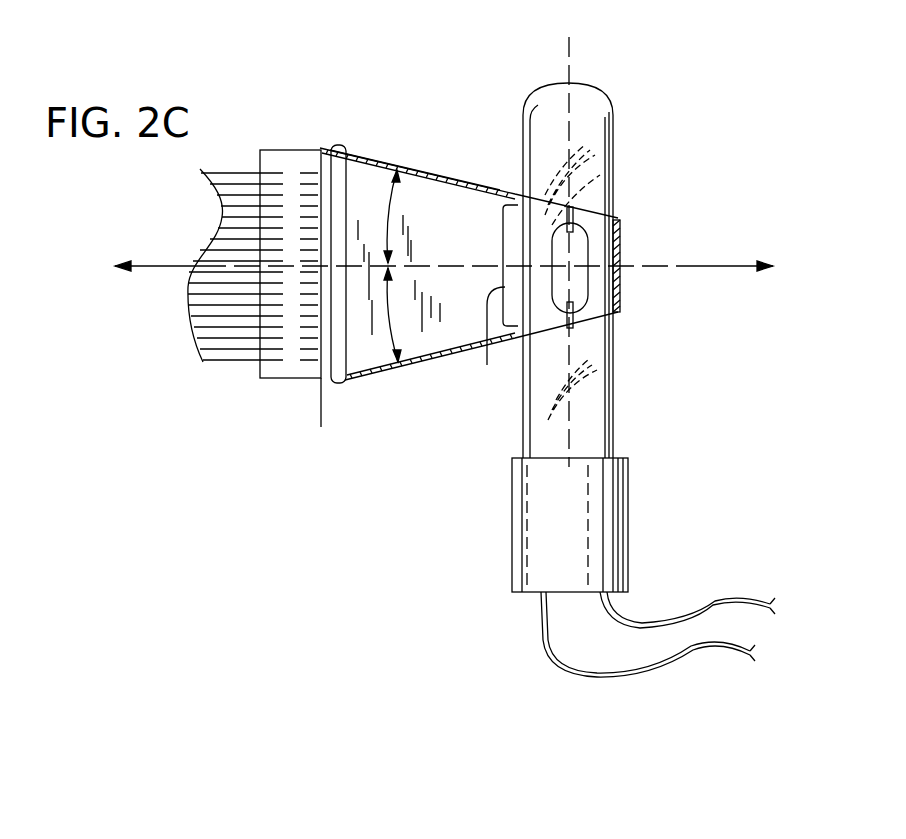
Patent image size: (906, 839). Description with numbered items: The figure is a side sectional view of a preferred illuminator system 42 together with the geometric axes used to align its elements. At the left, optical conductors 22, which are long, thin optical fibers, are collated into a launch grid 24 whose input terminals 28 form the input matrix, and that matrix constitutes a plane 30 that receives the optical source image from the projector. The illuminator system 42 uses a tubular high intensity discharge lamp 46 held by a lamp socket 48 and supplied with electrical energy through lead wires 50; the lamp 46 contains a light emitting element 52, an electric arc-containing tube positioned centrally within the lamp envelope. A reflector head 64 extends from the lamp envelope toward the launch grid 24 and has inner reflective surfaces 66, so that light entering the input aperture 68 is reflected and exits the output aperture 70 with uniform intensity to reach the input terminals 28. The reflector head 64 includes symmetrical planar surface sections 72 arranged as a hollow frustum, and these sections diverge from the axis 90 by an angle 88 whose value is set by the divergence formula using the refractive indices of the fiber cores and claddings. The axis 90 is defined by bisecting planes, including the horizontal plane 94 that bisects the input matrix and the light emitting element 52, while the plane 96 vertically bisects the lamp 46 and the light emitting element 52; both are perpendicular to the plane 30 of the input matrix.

The optical conductors 22 is at (230, 362).
The launch grid 24 is at (280, 380).
The input terminals 28 is at (322, 253).
The plane 30 is at (320, 395).
The illuminator system 42 is at (650, 142).
The lamp 46 is at (617, 172).
The lamp socket 48 is at (628, 497).
The lead wires 50 is at (710, 653).
The light emitting element 52 is at (585, 278).
The reflector head 64 is at (486, 178).
The inner reflective surfaces 66 is at (452, 250).
The input aperture 68 is at (487, 345).
The output aperture 70 is at (327, 152).
The planar surface sections 72 is at (430, 170).
The angle 88 is at (400, 165).
The axis 90 is at (633, 263).
The plane 94 is at (173, 258).
The plane 96 is at (572, 62).